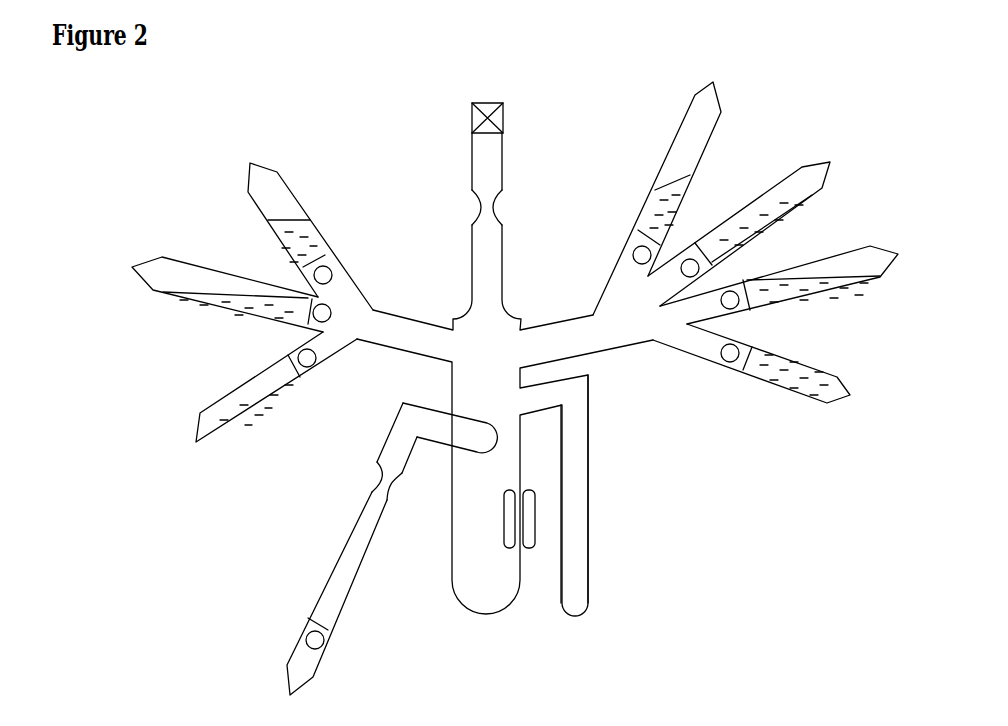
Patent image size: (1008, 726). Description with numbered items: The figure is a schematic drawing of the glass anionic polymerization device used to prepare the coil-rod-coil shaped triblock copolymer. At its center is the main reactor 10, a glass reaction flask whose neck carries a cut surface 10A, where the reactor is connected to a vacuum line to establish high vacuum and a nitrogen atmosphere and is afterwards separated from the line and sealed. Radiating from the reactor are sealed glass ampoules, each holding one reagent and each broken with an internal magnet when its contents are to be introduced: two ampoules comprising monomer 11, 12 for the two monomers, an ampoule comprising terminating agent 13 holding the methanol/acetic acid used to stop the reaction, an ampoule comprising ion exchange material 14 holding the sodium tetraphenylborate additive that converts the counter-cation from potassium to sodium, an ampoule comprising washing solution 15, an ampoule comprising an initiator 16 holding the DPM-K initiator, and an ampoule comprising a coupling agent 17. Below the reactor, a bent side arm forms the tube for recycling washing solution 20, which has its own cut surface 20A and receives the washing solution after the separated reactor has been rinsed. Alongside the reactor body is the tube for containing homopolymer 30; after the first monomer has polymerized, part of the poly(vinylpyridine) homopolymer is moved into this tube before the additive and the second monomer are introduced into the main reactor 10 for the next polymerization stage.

The main reactor 10 is at (497, 625).
The cut surface 10A is at (480, 207).
The ampoule comprising monomer 11 is at (312, 240).
The ampoule comprising monomer 12 is at (236, 303).
The ampoule comprising terminating agent 13 is at (210, 423).
The ampoule comprising ion exchange material 14 is at (652, 207).
The ampoule comprising washing solution 15 is at (760, 233).
The ampoule comprising an initiator 16 is at (803, 290).
The ampoule comprising a coupling agent 17 is at (793, 367).
The tube for recycling washing solution 20 is at (312, 591).
The cut surface 20A is at (376, 478).
The tube for containing homopolymer 30 is at (590, 485).